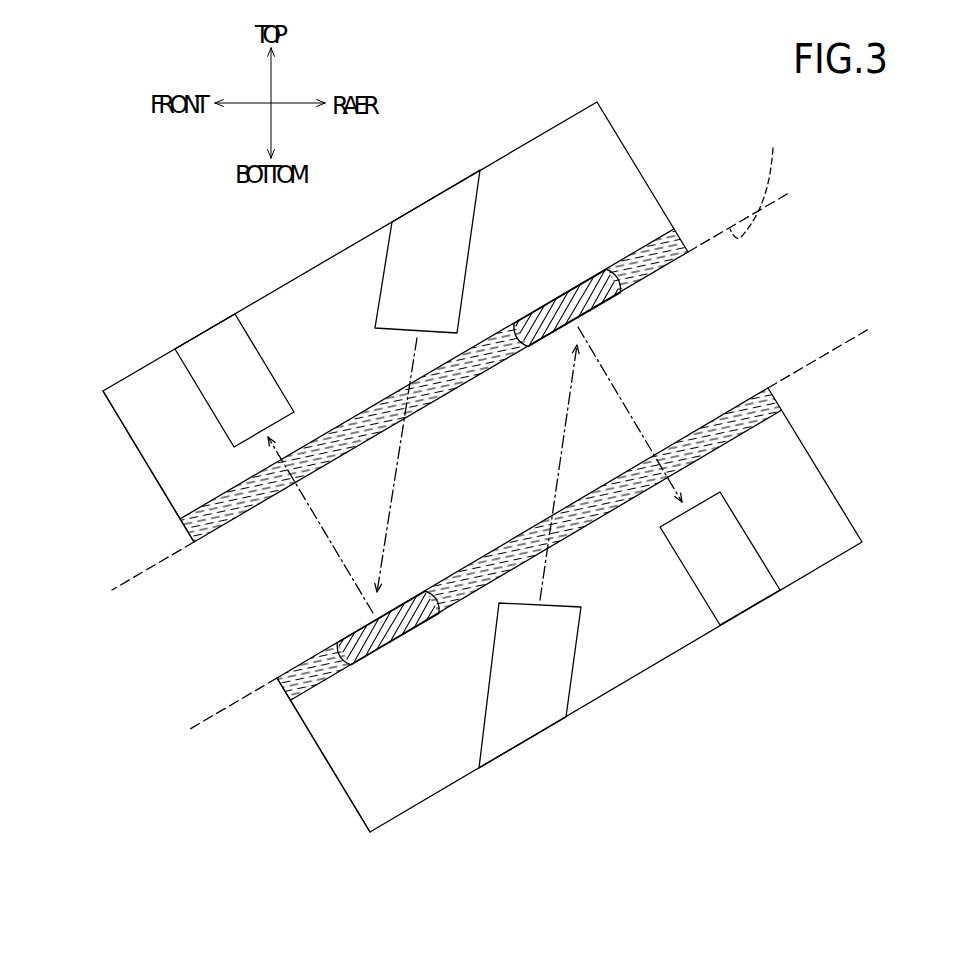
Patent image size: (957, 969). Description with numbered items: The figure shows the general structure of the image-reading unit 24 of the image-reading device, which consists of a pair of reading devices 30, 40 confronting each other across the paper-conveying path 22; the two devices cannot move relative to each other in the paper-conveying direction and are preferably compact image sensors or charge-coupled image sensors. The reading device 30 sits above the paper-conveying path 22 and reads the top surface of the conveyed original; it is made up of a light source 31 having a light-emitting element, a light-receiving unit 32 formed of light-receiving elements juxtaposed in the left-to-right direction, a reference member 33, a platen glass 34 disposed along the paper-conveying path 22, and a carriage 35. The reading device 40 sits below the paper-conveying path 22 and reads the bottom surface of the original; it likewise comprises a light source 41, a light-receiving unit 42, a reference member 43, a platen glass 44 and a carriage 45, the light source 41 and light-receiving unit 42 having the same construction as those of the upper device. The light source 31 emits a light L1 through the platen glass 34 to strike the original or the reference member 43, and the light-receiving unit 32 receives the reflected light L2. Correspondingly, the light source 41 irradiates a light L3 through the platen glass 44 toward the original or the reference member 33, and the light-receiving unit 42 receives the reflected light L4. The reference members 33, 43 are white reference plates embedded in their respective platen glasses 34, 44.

The paper-conveying path 22 is at (757, 180).
The image-reading unit 24 is at (518, 115).
The reading device 30 is at (624, 134).
The light source 31 is at (400, 257).
The light-receiving unit 32 is at (213, 382).
The reference member 33 is at (563, 307).
The platen glass 34 is at (222, 518).
The carriage 35 is at (132, 442).
The reading device 40 is at (814, 452).
The light source 41 is at (555, 676).
The light-receiving unit 42 is at (738, 556).
The reference member 43 is at (366, 660).
The platen glass 44 is at (746, 410).
The carriage 45 is at (338, 782).
The light L1 is at (390, 518).
The reflected light L2 is at (337, 555).
The light L3 is at (567, 422).
The reflected light L4 is at (615, 393).